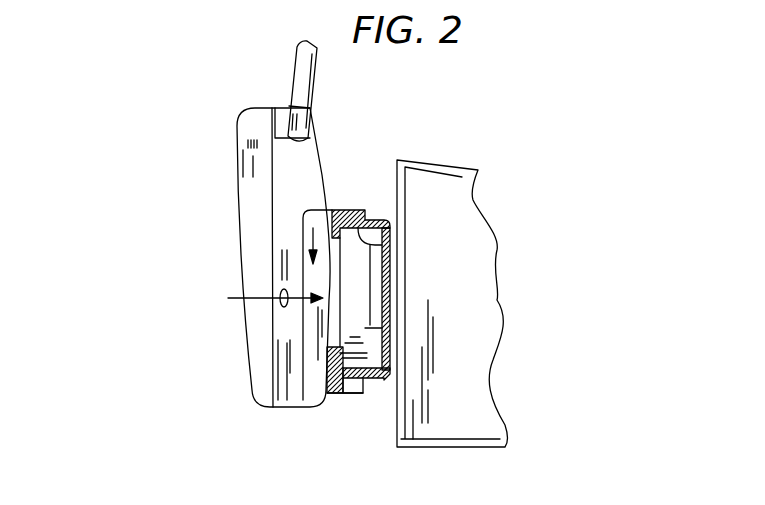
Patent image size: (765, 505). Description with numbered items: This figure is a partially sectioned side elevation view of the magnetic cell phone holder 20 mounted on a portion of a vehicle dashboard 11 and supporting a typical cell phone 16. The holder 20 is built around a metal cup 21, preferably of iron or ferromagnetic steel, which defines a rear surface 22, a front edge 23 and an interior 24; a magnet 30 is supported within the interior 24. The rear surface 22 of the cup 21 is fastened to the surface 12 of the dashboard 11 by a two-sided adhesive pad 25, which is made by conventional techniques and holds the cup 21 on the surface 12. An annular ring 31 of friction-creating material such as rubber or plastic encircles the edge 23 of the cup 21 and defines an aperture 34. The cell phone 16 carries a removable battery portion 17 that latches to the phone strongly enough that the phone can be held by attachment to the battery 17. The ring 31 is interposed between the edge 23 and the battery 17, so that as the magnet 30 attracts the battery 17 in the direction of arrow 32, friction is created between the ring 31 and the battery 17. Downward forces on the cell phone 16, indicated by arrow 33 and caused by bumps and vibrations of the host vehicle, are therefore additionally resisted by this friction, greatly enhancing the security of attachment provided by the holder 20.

The dashboard 11 is at (452, 165).
The surface 12 is at (397, 182).
The cell phone 16 is at (243, 230).
The removable battery portion 17 is at (302, 408).
The magnetic cell phone holder 20 is at (349, 186).
The metal cup 21 is at (383, 387).
The rear surface 22 is at (383, 360).
The front edge 23 is at (333, 372).
The interior 24 is at (382, 266).
The two-sided adhesive pad 25 is at (391, 300).
The magnet 30 is at (382, 316).
The annular ring 31 is at (343, 397).
The arrow 32 is at (240, 297).
The arrow 33 is at (305, 240).
The aperture 34 is at (330, 337).